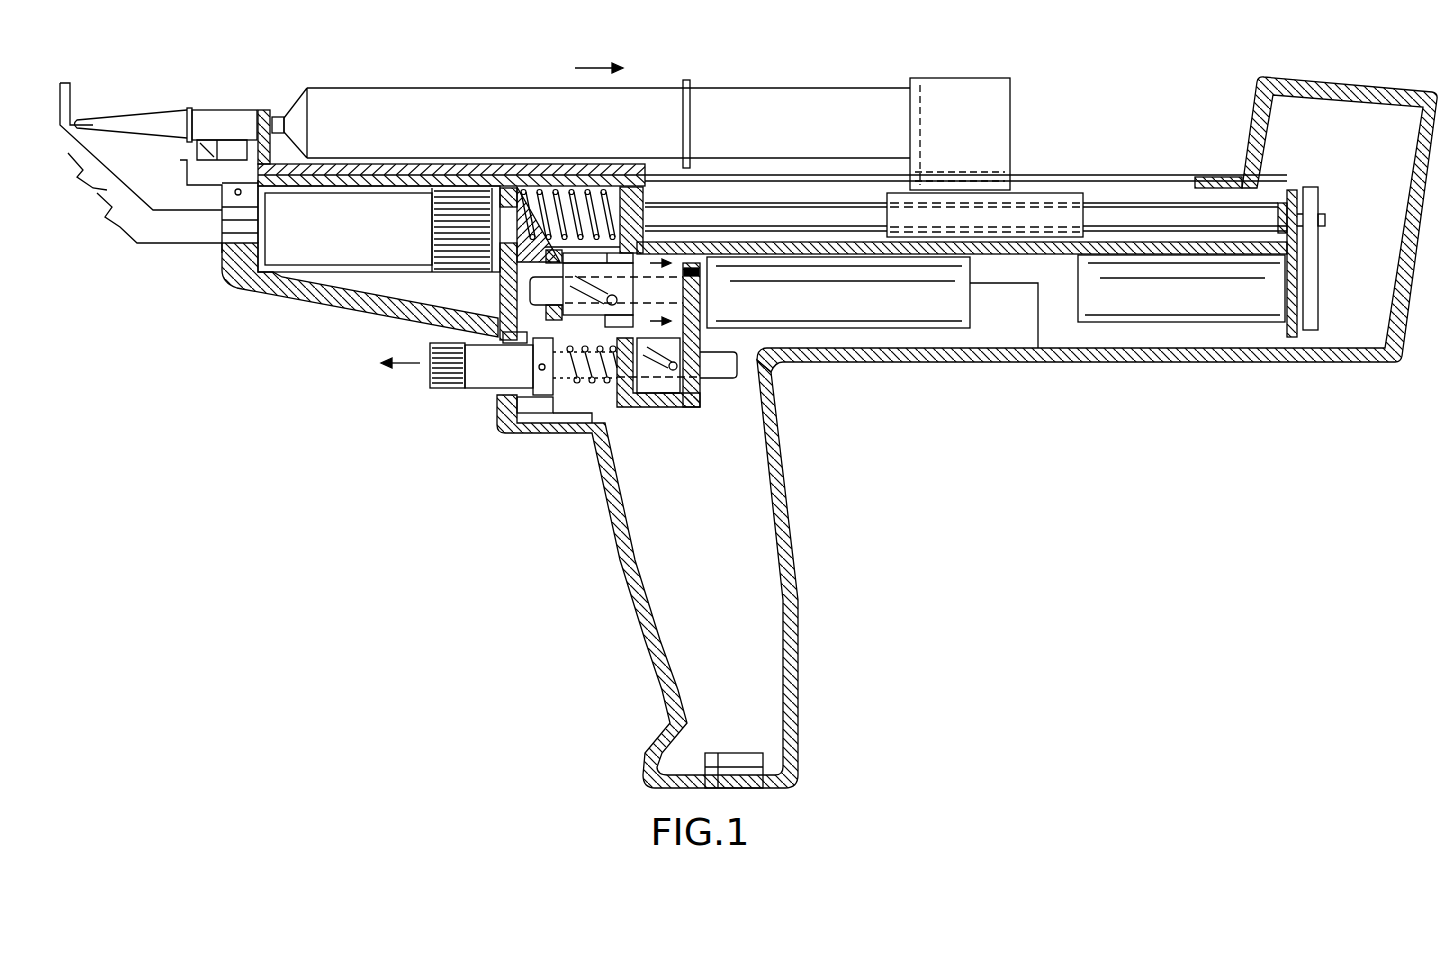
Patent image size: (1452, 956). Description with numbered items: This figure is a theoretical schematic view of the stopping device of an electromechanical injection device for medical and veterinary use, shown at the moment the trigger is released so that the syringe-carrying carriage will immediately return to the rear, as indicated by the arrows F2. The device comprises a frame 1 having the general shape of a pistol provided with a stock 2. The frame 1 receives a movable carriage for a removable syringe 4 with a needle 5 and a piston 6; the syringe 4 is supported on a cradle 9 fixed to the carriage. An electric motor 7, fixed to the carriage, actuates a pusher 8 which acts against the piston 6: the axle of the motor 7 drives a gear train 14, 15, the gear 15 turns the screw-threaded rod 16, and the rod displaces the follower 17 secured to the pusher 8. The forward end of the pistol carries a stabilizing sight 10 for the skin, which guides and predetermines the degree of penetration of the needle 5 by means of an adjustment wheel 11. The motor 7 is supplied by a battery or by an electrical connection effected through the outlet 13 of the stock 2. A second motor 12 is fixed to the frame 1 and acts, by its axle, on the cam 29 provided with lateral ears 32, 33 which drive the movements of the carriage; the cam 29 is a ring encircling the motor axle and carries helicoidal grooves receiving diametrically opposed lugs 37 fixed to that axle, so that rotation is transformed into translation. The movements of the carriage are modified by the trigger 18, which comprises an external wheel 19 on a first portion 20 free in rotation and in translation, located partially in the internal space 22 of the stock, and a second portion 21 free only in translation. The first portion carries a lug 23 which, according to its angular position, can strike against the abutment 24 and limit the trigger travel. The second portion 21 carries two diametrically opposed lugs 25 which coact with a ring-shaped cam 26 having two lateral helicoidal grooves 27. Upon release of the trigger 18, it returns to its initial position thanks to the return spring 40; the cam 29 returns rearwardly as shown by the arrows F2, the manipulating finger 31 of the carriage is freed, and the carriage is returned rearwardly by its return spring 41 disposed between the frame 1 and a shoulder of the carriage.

The frame 1 is at (1212, 355).
The stock 2 is at (795, 648).
The syringe 4 is at (655, 115).
The needle 5 is at (83, 124).
The piston 6 is at (922, 124).
The electric motor 7 is at (1142, 293).
The pusher 8 is at (1008, 92).
The cradle 9 is at (280, 118).
The stabilizing sight 10 is at (159, 178).
The adjustment wheel 11 is at (455, 214).
The motor 12 is at (915, 300).
The outlet 13 is at (745, 775).
The gear 14 is at (1310, 310).
The gear 15 is at (1310, 197).
The screw-threaded rod 16 is at (1107, 217).
The follower 17 is at (1027, 207).
The trigger 18 is at (482, 372).
The external wheel 19 is at (438, 390).
The first portion 20 is at (492, 384).
The second portion 21 is at (608, 384).
The internal space 22 is at (745, 582).
The lug 23 is at (497, 333).
The abutment 24 is at (537, 404).
The lugs 25 is at (687, 407).
The ring-shaped cam 26 is at (677, 400).
The helicoidal grooves 27 is at (668, 384).
The cam 29 is at (583, 262).
The manipulating finger 31 is at (533, 233).
The lateral ear 32 is at (624, 252).
The lateral ear 33 is at (708, 373).
The lugs 37 is at (617, 297).
The return spring 40 is at (570, 405).
The return spring 41 is at (535, 187).
The arrows F2 is at (703, 305).